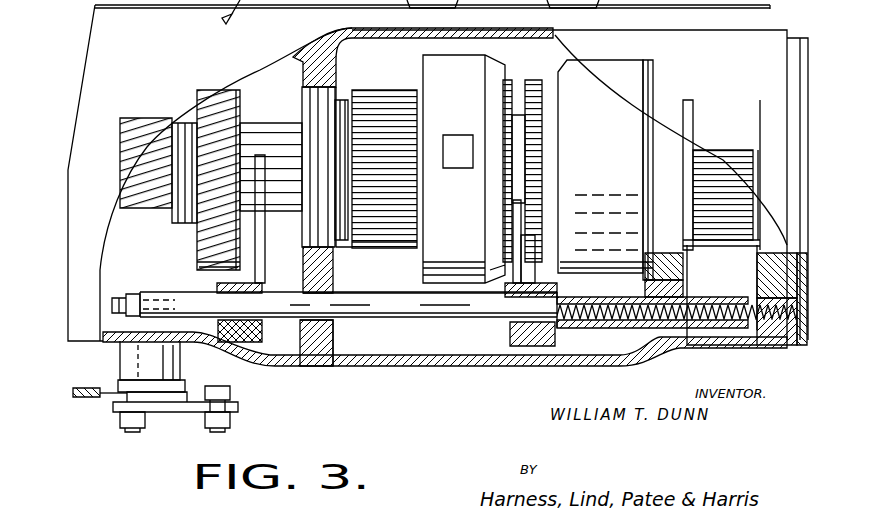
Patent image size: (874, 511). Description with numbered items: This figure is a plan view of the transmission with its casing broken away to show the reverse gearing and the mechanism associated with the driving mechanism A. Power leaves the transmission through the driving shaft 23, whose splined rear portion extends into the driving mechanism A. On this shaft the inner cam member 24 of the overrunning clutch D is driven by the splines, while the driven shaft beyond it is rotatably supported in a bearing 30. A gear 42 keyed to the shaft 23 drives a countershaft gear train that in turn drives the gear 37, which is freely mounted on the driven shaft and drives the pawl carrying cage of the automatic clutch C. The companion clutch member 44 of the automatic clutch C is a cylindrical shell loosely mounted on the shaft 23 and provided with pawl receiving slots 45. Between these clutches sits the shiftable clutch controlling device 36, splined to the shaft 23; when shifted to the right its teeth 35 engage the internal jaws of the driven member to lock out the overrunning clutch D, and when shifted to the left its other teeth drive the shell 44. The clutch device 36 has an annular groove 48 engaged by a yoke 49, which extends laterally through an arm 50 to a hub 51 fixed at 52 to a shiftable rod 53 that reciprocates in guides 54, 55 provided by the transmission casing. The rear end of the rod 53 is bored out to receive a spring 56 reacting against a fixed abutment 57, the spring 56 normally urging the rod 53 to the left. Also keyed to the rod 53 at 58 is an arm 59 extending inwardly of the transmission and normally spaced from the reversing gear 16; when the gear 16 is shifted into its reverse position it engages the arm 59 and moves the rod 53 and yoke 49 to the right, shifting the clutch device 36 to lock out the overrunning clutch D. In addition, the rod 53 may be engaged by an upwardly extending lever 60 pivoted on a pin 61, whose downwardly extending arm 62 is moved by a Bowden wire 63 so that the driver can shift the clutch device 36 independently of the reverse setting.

The driving mechanism A is at (766, 41).
The automatic clutch C is at (443, 72).
The overrunning clutch D is at (627, 127).
The gear 16 is at (243, 100).
The shaft 23 is at (278, 136).
The inner cam member 24 is at (317, 98).
The bearing 30 is at (672, 156).
The teeth 35 is at (537, 80).
The shiftable clutch controlling device 36 is at (553, 130).
The gear 37 is at (396, 74).
The gear 42 is at (717, 166).
The companion clutch member 44 is at (360, 182).
The pawl receiving slots 45 is at (450, 275).
The annular groove 48 is at (516, 112).
The yoke 49 is at (519, 197).
The arm 50 is at (517, 253).
The hub 51 is at (555, 366).
The keying point 52 is at (578, 340).
The shiftable rod 53 is at (434, 330).
The guide 54 is at (652, 350).
The guide 55 is at (342, 326).
The spring 56 is at (737, 275).
The fixed abutment 57 is at (793, 345).
The keying point 58 is at (258, 333).
The arm 59 is at (258, 257).
The lever 60 is at (120, 306).
The pin 61 is at (140, 360).
The arm 62 is at (190, 412).
The Bowden wire 63 is at (86, 397).